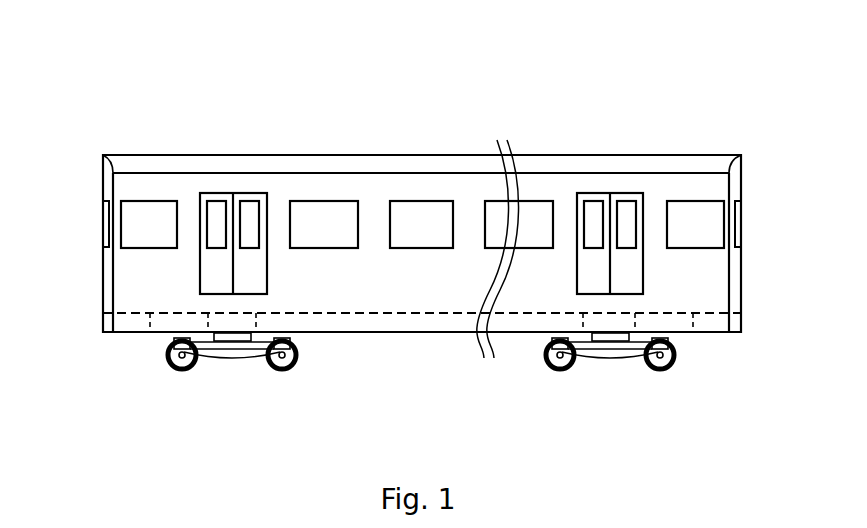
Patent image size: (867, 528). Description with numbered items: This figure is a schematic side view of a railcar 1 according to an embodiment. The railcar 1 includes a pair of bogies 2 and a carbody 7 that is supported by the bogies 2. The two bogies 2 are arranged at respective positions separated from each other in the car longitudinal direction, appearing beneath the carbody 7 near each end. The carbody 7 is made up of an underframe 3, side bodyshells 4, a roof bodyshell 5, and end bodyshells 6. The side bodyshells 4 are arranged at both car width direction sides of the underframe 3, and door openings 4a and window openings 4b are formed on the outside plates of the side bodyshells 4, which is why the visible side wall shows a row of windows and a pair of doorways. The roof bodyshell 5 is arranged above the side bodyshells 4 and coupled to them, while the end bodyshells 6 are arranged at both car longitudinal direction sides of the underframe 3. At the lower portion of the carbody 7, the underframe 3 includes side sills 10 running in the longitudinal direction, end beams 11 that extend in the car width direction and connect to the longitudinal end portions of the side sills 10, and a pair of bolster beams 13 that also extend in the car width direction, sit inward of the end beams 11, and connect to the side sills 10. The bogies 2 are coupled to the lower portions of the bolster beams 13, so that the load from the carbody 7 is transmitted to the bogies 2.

The railcar 1 is at (766, 124).
The bogies 2 is at (237, 358).
The underframe 3 is at (712, 345).
The side bodyshells 4 is at (380, 188).
The door openings 4a is at (250, 200).
The window openings 4b is at (318, 200).
The roof bodyshell 5 is at (690, 155).
The end bodyshells 6 is at (101, 192).
The carbody 7 is at (84, 201).
The side sills 10 is at (308, 333).
The end beams 11 is at (100, 327).
The bolster beams 13 is at (258, 360).